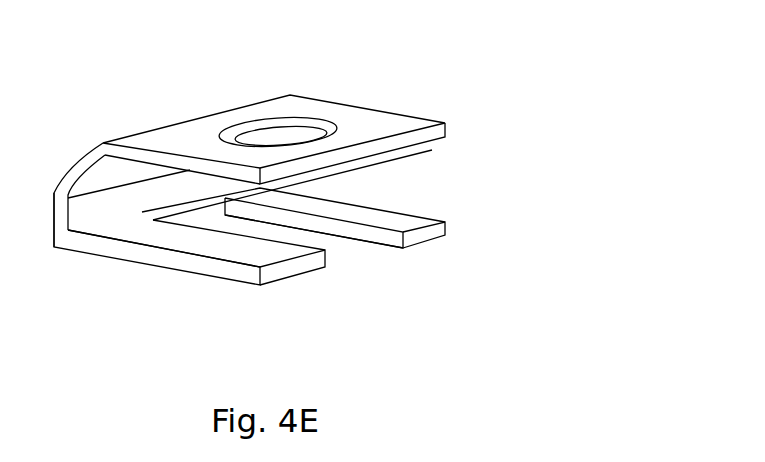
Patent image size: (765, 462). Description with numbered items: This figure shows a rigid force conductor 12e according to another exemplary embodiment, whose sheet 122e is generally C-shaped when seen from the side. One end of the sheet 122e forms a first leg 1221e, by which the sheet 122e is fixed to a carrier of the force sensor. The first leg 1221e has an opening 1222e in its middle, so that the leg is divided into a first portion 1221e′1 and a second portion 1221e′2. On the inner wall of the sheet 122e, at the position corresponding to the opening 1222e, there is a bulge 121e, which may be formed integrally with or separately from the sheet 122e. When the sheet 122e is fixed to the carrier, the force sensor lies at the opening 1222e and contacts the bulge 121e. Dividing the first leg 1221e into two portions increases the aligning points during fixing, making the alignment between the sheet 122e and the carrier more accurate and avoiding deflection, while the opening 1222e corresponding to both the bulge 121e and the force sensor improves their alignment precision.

The rigid force conductor 12e is at (313, 30).
The sheet 122e is at (354, 116).
The bulge 121e is at (286, 171).
The first leg 1221e is at (480, 341).
The first portion 1221e′1 is at (300, 272).
The second portion 1221e′2 is at (423, 236).
The opening 1222e is at (354, 228).